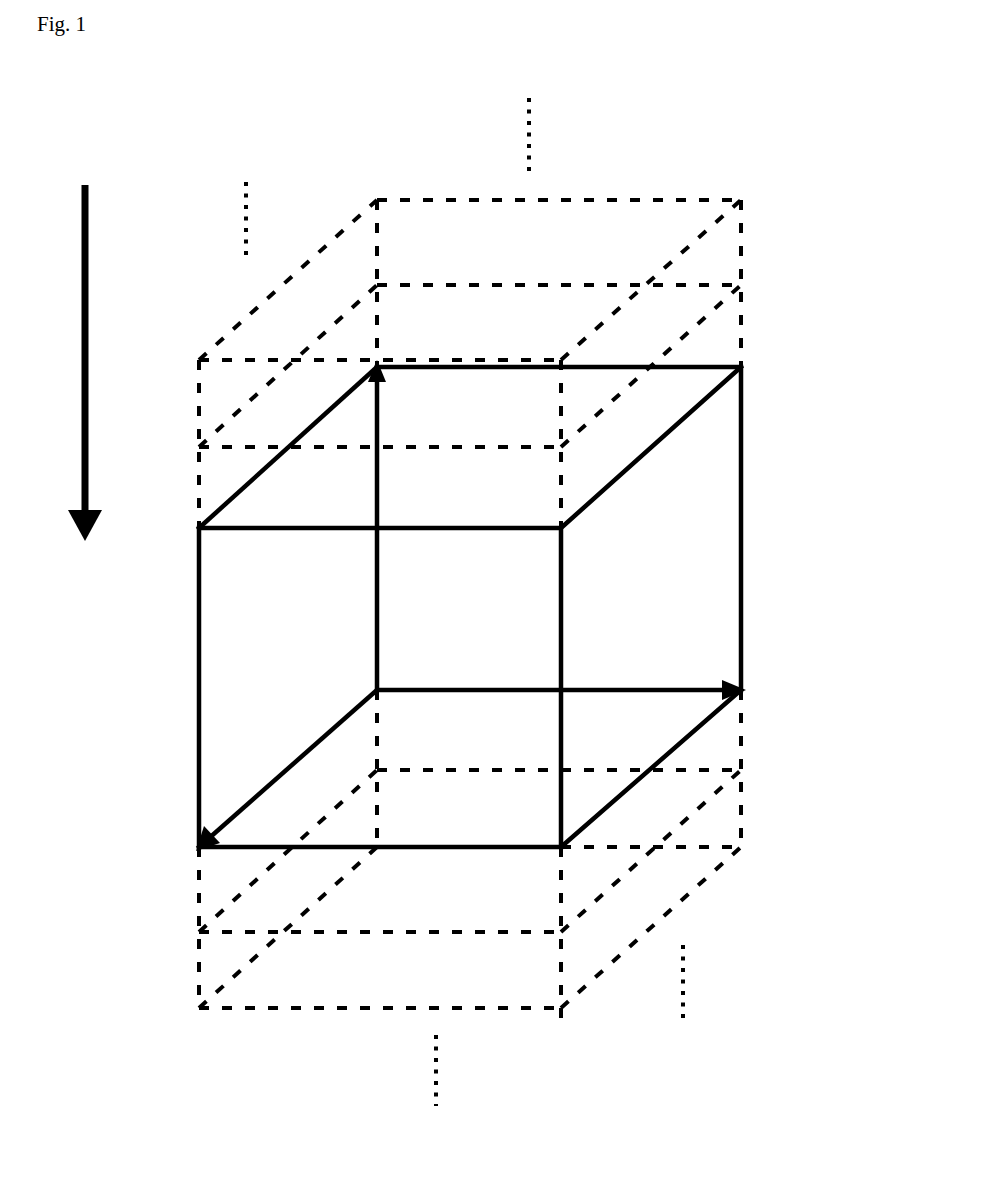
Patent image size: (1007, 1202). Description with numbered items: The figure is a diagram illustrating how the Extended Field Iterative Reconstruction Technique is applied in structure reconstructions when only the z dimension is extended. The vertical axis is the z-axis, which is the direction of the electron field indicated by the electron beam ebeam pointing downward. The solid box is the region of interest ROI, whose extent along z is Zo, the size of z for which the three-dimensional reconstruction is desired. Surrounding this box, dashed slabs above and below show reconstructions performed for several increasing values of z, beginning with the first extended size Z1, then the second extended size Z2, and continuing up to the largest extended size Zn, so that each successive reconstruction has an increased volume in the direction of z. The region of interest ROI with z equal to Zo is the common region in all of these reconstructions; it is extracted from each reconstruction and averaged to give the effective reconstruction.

The region of interest ROI is at (524, 605).
The electron beam ebeam is at (84, 389).
The extended z size n Zn is at (487, 600).
The extended z size 2 Z2 is at (773, 525).
The extended z size 1 Z1 is at (773, 527).
The desired z size Zo is at (774, 404).